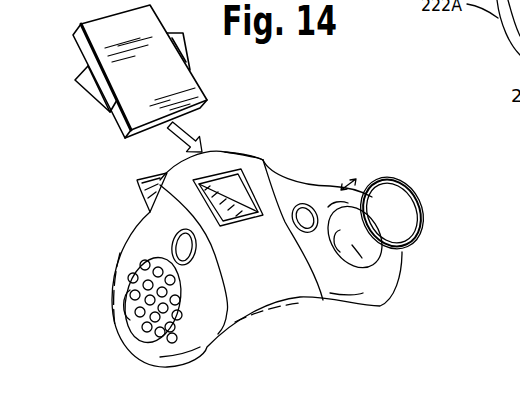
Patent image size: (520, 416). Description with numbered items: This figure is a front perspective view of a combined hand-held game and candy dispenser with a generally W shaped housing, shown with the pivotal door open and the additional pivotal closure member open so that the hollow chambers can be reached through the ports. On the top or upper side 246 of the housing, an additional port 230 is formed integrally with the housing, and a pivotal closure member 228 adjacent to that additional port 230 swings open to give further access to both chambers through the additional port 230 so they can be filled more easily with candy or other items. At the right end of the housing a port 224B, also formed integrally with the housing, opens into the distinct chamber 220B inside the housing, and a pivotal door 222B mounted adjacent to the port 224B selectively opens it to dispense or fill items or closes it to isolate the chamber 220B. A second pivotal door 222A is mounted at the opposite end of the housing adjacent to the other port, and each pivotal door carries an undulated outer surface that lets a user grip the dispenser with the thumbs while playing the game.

The additional port 230 is at (225, 152).
The top or upper side 246 is at (257, 163).
The pivotal closure member 228 is at (138, 182).
The pivotal door 222A is at (132, 273).
The port 224B is at (328, 207).
The pivotal door 222B is at (407, 248).
The chamber 220B is at (375, 272).